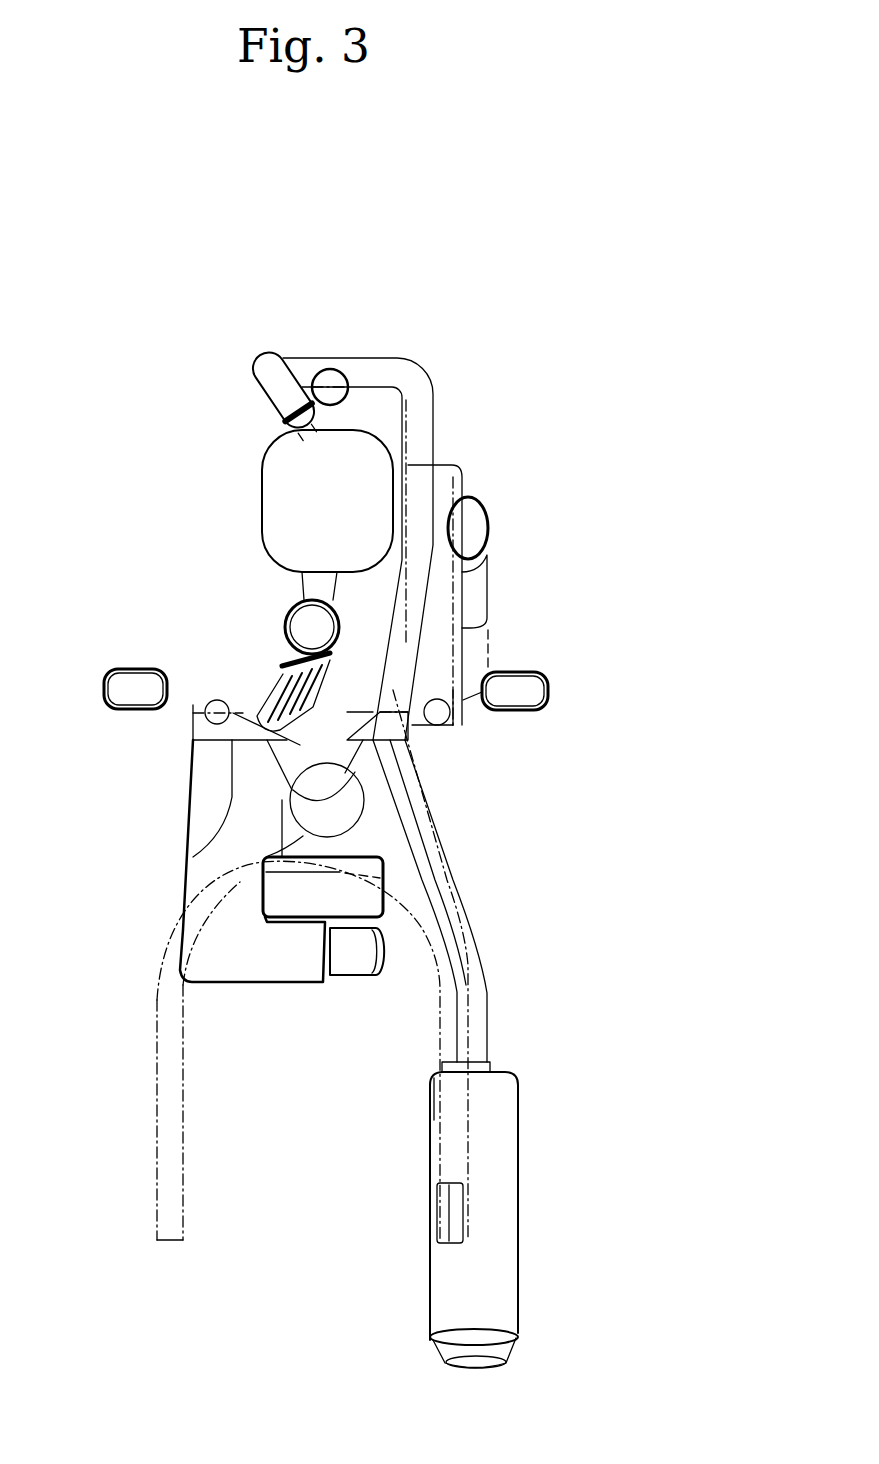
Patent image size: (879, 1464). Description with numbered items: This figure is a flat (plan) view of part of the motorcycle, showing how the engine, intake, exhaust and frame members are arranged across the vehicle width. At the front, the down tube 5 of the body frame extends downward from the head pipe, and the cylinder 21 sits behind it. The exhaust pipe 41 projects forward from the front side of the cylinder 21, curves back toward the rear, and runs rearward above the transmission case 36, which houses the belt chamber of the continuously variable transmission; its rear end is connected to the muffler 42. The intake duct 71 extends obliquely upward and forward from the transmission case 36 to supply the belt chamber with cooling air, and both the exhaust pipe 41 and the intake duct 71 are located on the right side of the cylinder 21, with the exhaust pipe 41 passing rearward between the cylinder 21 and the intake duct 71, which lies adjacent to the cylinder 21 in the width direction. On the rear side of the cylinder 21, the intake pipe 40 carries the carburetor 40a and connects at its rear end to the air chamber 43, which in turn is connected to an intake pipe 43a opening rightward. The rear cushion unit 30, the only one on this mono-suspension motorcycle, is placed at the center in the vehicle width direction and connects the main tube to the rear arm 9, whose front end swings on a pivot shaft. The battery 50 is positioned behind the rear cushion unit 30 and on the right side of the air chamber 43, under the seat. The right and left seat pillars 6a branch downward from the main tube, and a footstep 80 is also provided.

The down tube 5 is at (326, 373).
The exhaust pipe 41 is at (435, 418).
The cylinder 21 is at (273, 478).
The intake duct 71 is at (483, 503).
The transmission case 36 is at (490, 628).
The intake pipe 40 is at (300, 582).
The carburetor 40a is at (282, 630).
The footstep 80 is at (102, 680).
The seat pillar 6a is at (205, 716).
The air chamber 43 is at (187, 806).
The rear cushion unit 30 is at (307, 817).
The battery 50 is at (372, 903).
The intake pipe 43a is at (353, 972).
The rear arm 9 is at (155, 1108).
The muffler 42 is at (440, 1290).